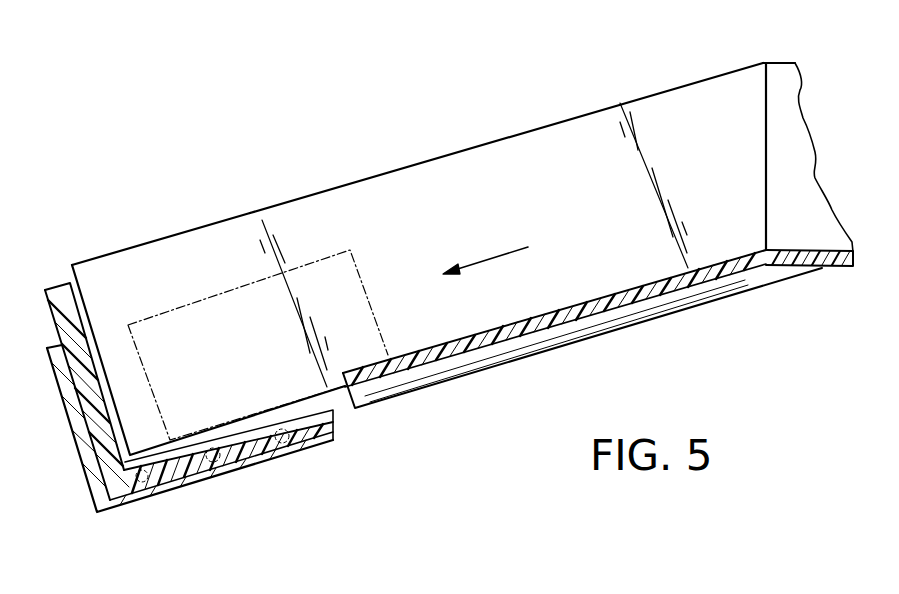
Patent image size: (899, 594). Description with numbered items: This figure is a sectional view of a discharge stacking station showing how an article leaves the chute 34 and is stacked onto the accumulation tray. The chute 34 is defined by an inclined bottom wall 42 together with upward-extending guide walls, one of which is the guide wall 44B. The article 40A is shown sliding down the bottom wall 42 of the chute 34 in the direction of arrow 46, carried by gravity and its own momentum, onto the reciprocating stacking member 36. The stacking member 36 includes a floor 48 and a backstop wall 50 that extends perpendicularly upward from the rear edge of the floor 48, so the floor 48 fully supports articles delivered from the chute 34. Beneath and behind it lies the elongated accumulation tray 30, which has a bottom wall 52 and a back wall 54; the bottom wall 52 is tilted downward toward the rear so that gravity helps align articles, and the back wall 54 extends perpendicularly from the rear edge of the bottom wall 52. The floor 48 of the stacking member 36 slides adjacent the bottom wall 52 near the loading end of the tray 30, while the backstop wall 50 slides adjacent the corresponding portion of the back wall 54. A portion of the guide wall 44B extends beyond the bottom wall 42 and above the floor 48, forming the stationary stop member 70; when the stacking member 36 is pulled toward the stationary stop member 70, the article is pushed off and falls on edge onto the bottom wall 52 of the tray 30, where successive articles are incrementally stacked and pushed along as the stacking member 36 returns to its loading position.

The chute 34 is at (574, 141).
The guide wall 44B is at (440, 167).
The stationary stop member 70 is at (136, 258).
The article 40A is at (212, 306).
The arrow 46 is at (488, 253).
The inclined bottom wall 42 is at (571, 313).
The backstop wall 50 is at (53, 303).
The elongated accumulation tray 30 is at (103, 512).
The back wall 54 is at (72, 430).
The bottom wall 52 is at (204, 477).
The floor 48 is at (231, 453).
The reciprocating stacking member 36 is at (118, 478).